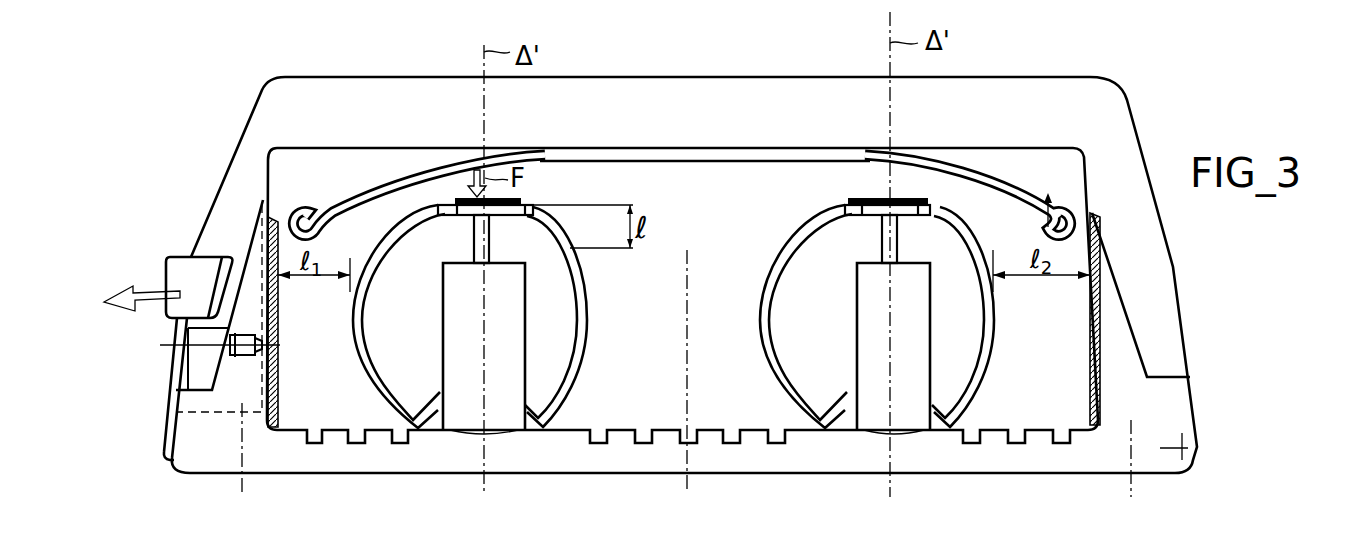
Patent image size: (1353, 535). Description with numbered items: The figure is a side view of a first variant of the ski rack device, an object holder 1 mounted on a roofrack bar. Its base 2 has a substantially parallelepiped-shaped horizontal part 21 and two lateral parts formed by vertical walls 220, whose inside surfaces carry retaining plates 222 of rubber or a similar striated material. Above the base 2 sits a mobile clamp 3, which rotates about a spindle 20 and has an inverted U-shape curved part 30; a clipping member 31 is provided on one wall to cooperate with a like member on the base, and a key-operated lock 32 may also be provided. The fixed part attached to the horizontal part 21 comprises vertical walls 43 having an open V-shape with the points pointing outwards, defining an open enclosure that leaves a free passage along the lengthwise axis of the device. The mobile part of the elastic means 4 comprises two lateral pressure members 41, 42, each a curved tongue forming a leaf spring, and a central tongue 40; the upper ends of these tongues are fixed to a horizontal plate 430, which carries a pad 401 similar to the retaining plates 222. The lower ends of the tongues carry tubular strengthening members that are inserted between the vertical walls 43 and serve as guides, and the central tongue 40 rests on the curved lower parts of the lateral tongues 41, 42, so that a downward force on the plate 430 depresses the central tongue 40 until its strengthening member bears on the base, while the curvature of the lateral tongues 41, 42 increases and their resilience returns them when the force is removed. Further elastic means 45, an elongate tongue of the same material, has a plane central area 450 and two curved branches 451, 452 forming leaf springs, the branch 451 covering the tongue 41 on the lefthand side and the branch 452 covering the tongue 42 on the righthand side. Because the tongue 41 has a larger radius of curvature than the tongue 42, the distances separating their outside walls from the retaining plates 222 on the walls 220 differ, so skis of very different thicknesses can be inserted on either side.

The object holder 1 is at (1147, 58).
The base 2 is at (416, 492).
The mobile clamp 3 is at (631, 57).
The elastic means 4 is at (708, 299).
The spindle 20 is at (1198, 462).
The horizontal part 21 is at (657, 460).
The inverted U-shape curved part 30 is at (737, 100).
The clipping member 31 is at (187, 264).
The lock 32 is at (190, 347).
The central tongue 40 is at (490, 237).
The lateral pressure member 41 is at (363, 318).
The lateral pressure member 42 is at (588, 322).
The vertical wall 43 is at (513, 353).
The further elastic means 45 is at (681, 138).
The vertical wall 220 is at (237, 392).
The retaining plate 222 is at (280, 378).
The pad 401 is at (535, 199).
The horizontal plate 430 is at (450, 214).
The plane central area 450 is at (665, 155).
The curved branch 451 is at (393, 181).
The curved branch 452 is at (975, 184).